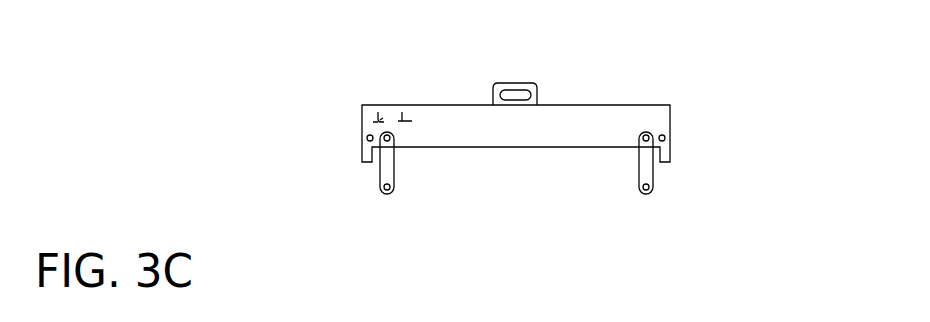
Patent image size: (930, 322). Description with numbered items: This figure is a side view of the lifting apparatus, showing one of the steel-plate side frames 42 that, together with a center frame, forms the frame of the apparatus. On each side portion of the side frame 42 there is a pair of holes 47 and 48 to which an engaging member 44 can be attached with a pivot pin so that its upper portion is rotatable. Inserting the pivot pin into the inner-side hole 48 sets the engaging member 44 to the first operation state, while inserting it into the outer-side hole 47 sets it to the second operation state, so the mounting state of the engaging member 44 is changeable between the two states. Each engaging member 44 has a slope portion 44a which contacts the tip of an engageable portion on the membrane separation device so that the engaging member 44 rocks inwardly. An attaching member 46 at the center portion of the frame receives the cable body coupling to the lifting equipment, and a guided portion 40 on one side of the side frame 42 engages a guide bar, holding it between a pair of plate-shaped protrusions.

The guided portion 40 is at (378, 118).
The side frame 42 is at (583, 118).
The engaging member 44 is at (395, 175).
The slope portion 44a is at (387, 193).
The attaching member 46 is at (517, 84).
The outer-side hole 47 is at (366, 138).
The inner-side hole 48 is at (387, 130).